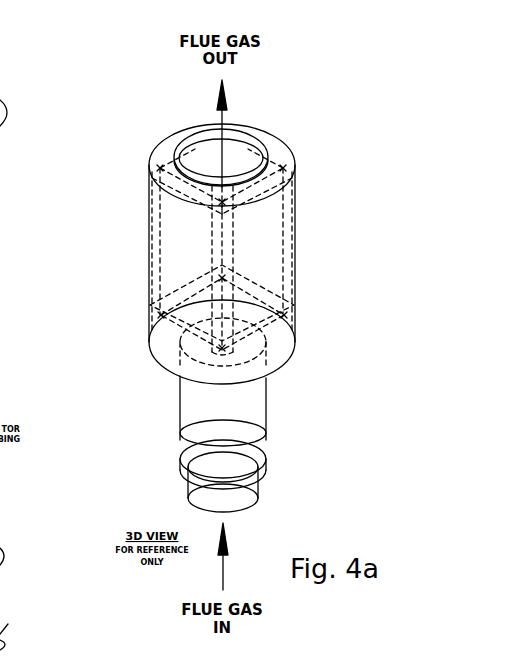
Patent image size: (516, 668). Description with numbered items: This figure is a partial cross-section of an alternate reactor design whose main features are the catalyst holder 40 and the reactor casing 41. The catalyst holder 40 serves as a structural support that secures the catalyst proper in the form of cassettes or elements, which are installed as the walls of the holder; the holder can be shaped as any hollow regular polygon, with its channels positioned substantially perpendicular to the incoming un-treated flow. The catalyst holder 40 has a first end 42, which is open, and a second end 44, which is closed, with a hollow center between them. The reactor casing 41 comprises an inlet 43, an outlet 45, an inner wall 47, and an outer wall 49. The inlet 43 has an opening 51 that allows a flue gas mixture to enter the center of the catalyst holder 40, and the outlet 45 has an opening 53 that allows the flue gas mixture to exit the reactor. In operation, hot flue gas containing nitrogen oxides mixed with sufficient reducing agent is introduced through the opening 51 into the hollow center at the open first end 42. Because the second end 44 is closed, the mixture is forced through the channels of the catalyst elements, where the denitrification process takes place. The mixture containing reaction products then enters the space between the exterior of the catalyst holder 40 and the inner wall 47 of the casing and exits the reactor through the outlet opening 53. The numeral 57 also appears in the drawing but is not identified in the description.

The catalyst holder 40 is at (273, 257).
The reactor casing 41 is at (166, 355).
The first end 42 is at (296, 318).
The inlet 43 is at (168, 373).
The second end 44 is at (294, 160).
The outlet 45 is at (160, 140).
The inner wall 47 is at (150, 306).
The outer wall 49 is at (148, 265).
The opening 51 is at (255, 365).
The opening 53 is at (222, 141).
The reactor element 57 is at (15, 214).